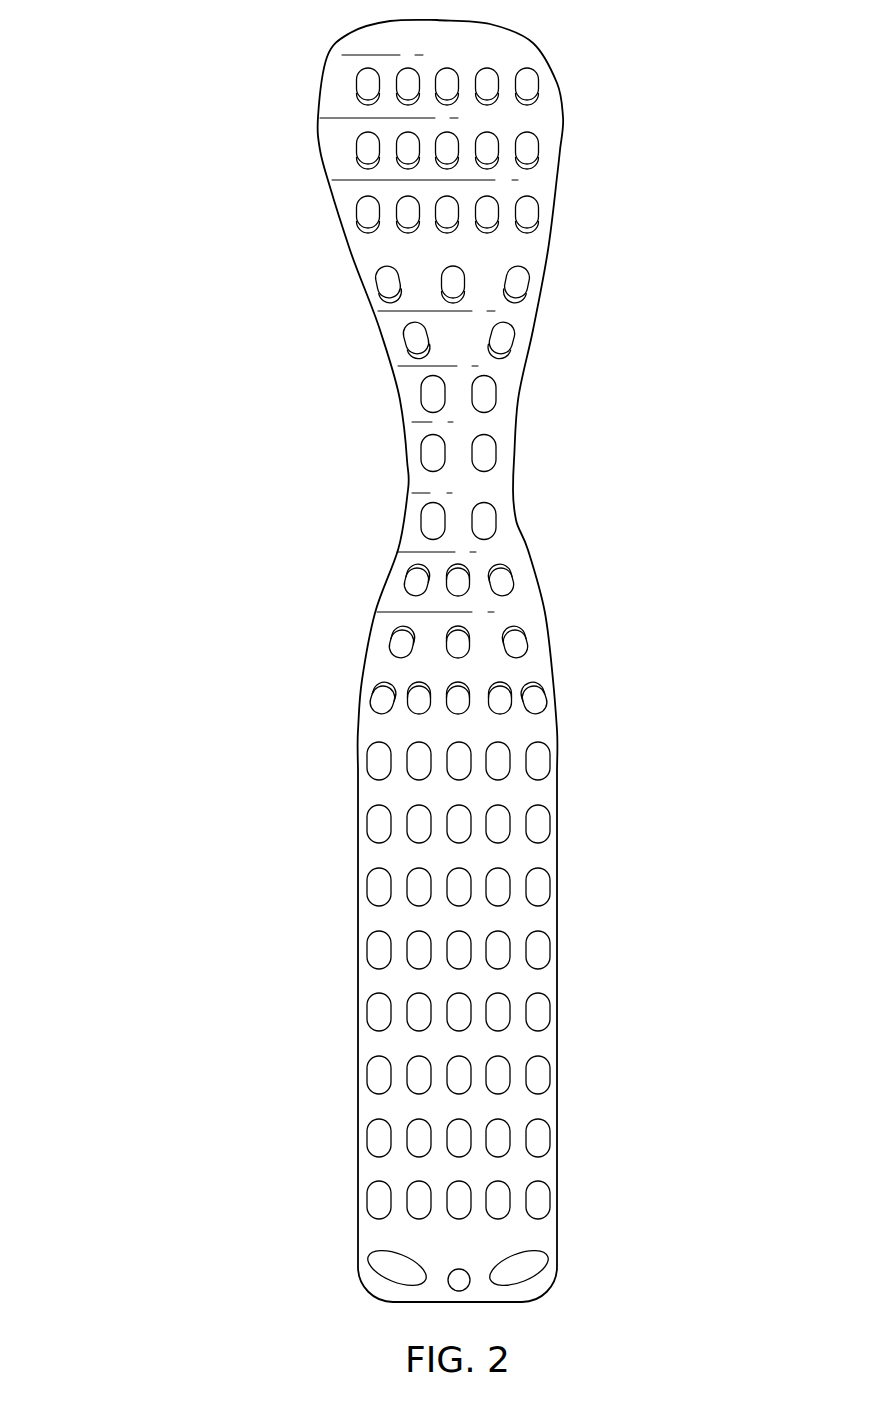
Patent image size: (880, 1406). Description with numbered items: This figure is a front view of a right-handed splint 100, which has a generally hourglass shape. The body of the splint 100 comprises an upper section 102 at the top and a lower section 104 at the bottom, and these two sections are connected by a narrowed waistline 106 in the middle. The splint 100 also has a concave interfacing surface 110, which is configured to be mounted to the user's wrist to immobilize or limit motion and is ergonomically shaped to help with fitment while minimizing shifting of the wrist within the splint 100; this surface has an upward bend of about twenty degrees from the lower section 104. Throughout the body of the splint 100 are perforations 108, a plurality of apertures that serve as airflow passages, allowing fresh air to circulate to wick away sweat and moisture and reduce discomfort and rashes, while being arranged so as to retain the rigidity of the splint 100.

The right-handed splint 100 is at (262, 244).
The upper section 102 is at (587, 117).
The lower section 104 is at (587, 842).
The waistline 106 is at (542, 475).
The perforations 108 is at (523, 284).
The interfacing surface 110 is at (423, 615).